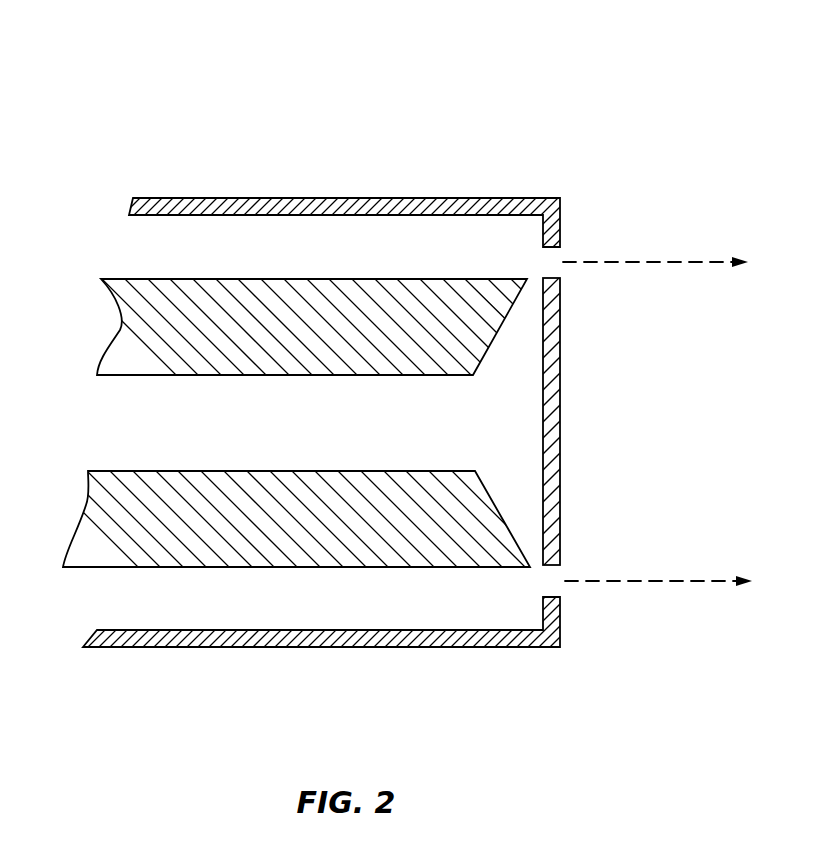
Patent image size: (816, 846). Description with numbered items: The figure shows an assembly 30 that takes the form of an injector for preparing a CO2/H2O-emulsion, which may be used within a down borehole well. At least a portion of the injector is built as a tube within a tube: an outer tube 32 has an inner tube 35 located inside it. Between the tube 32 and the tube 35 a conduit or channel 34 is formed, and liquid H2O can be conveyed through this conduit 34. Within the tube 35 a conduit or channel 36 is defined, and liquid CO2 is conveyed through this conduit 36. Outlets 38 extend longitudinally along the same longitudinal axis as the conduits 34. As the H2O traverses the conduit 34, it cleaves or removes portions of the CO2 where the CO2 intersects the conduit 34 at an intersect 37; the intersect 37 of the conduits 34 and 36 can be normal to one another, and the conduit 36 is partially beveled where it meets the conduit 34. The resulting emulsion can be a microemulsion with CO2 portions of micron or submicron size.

The assembly 30 is at (570, 100).
The tube 32 is at (340, 198).
The conduit or channel 34 is at (205, 250).
The tube 35 is at (413, 327).
The conduit or channel 36 is at (183, 427).
The intersect 37 is at (530, 277).
The outlets 38 is at (648, 260).